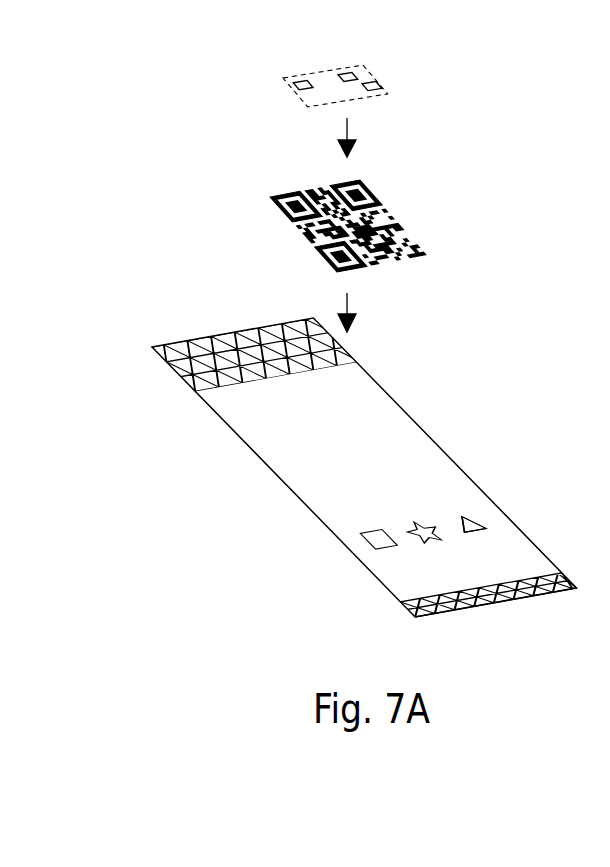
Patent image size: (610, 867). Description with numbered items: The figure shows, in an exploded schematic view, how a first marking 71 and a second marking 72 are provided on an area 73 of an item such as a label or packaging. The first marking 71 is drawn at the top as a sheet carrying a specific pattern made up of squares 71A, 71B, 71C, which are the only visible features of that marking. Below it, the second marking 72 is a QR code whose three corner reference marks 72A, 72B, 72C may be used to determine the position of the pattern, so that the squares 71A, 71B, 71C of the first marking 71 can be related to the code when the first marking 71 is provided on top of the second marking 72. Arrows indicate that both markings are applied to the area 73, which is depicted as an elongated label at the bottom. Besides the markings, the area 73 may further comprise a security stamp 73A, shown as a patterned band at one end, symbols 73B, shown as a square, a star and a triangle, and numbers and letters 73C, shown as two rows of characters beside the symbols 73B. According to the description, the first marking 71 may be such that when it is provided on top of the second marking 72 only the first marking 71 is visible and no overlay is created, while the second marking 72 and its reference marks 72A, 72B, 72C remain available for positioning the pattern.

The first marking 71 is at (383, 90).
The square 71A is at (377, 87).
The square 71B is at (367, 67).
The square 71C is at (291, 85).
The second marking 72 is at (400, 222).
The reference mark 72A is at (362, 182).
The reference mark 72B is at (337, 270).
The reference mark 72C is at (270, 197).
The area 73 is at (408, 413).
The security stamp 73A is at (170, 363).
The symbols 73B is at (473, 513).
The numbers and letters 73C is at (500, 548).